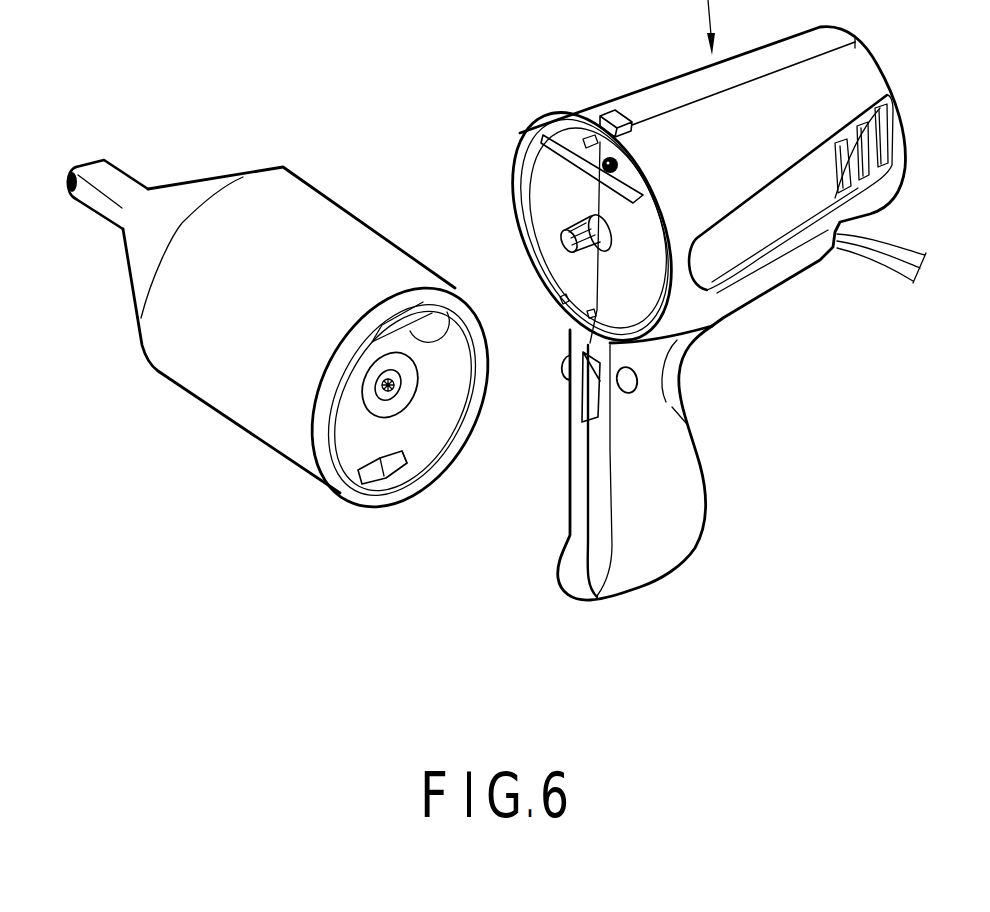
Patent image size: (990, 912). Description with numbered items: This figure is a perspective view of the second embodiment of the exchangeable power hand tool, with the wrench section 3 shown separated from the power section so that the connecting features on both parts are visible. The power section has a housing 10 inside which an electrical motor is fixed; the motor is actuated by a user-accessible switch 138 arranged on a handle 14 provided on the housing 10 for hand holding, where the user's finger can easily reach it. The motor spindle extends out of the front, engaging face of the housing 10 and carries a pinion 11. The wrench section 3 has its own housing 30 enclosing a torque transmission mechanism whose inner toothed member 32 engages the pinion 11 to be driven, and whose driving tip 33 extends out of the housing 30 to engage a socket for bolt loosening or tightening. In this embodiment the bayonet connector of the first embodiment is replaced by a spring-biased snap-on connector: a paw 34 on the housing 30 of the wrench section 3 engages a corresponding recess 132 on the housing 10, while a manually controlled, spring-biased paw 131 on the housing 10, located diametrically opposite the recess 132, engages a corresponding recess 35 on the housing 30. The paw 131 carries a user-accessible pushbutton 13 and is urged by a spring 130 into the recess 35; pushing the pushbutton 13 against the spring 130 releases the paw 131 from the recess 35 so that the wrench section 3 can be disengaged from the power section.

The wrench section 3 is at (364, 192).
The housing 30 is at (302, 193).
The inner toothed member 32 is at (373, 397).
The driving tip 33 is at (115, 178).
The paw 34 is at (385, 500).
The recess 35 is at (455, 288).
The housing 10 is at (865, 88).
The pinion 11 is at (598, 252).
The pushbutton 13 is at (616, 110).
The handle 14 is at (670, 530).
The spring 130 is at (642, 172).
The paw 131 is at (588, 138).
The recess 132 is at (590, 311).
The switch 138 is at (572, 420).